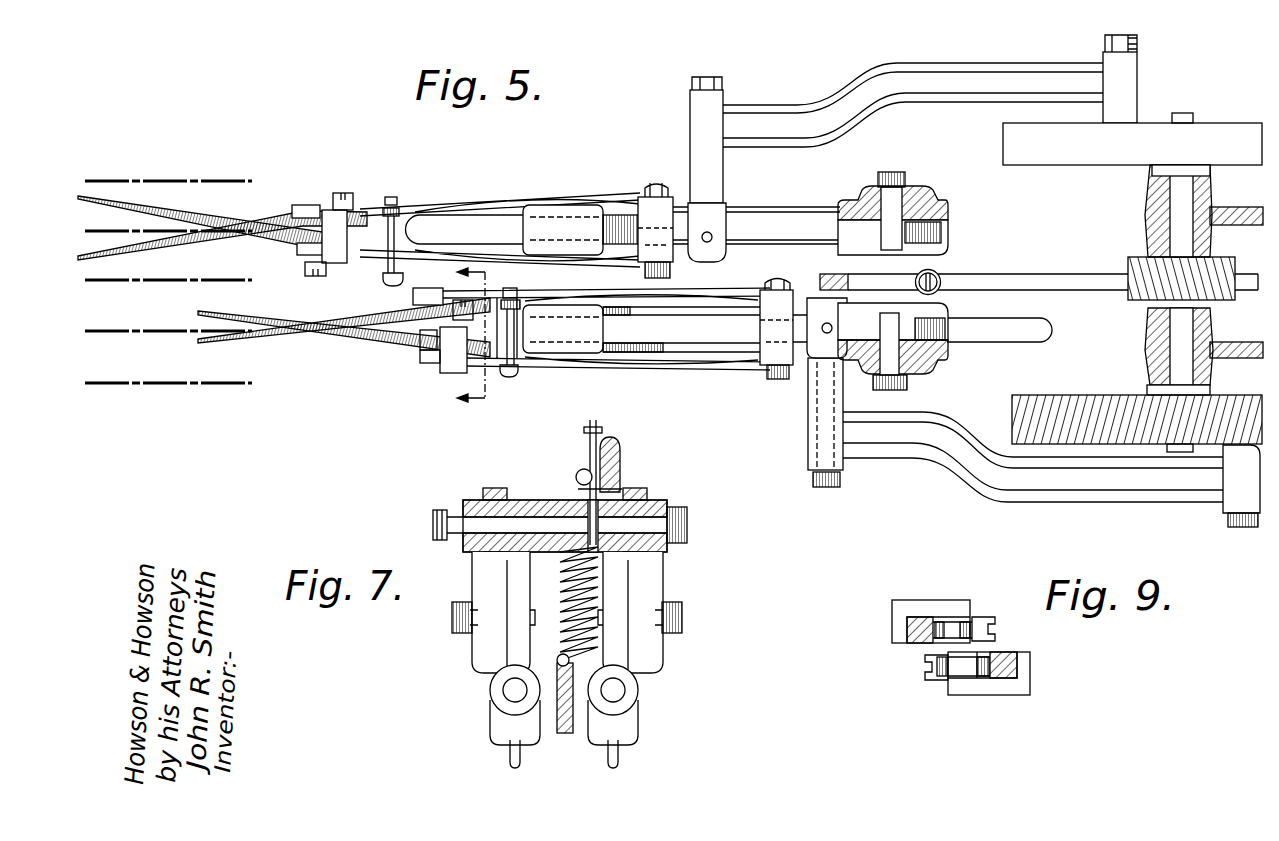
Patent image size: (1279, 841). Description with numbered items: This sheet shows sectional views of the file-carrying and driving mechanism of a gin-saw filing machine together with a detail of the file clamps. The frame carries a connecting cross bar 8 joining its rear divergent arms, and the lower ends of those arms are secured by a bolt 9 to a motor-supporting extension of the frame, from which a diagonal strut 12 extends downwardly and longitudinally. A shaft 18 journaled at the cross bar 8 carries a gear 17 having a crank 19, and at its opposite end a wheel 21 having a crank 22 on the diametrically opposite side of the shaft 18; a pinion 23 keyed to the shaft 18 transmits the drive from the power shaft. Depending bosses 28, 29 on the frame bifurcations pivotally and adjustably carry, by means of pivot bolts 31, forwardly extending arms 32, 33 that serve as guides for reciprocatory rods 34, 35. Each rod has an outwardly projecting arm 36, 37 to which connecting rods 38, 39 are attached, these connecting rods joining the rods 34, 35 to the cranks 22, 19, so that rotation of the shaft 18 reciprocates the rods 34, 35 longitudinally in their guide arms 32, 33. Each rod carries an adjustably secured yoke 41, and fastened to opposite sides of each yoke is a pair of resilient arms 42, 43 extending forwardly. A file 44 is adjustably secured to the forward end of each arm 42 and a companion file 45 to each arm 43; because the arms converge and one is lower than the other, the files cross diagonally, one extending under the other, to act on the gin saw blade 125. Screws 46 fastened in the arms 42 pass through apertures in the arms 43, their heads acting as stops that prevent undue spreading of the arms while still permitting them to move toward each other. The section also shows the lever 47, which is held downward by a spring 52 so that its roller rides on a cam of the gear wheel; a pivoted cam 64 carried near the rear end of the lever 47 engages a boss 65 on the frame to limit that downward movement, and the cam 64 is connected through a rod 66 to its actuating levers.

In FIG. 5, the gin saw blade 125 is at (157, 170).
In FIG. 5, the file 44 is at (212, 212).
In FIG. 9, the file 44 is at (925, 622).
In FIG. 5, the file 45 is at (180, 253).
In FIG. 9, the file 45 is at (995, 660).
In FIG. 5, the resilient arm 42 is at (300, 205).
In FIG. 9, the resilient arm 42 is at (970, 695).
In FIG. 5, the resilient arm 43 is at (420, 250).
In FIG. 9, the resilient arm 43 is at (892, 612).
In FIG. 5, the screw 46 is at (385, 233).
In FIG. 5, the yoke 41 is at (638, 217).
In FIG. 5, the outwardly projecting arm 36 is at (695, 182).
In FIG. 5, the forwardly extending arm 32 is at (740, 208).
In FIG. 7, the forwardly extending arm 32 is at (638, 735).
In FIG. 5, the reciprocatory rod 34 is at (797, 222).
In FIG. 7, the reciprocatory rod 34 is at (630, 693).
In FIG. 5, the pivot bolt 31 is at (890, 173).
In FIG. 7, the pivot bolt 31 is at (462, 620).
In FIG. 5, the depending boss 28 is at (937, 205).
In FIG. 7, the depending boss 28 is at (647, 575).
In FIG. 5, the connecting rod 38 is at (887, 65).
In FIG. 5, the crank 22 is at (1137, 40).
In FIG. 5, the wheel 21 is at (1072, 165).
In FIG. 5, the connecting cross bar 8 is at (1240, 207).
In FIG. 5, the pinion 23 is at (1147, 258).
In FIG. 5, the diagonal strut 12 is at (1012, 275).
In FIG. 7, the diagonal strut 12 is at (567, 737).
In FIG. 5, the spring 52 is at (938, 275).
In FIG. 7, the spring 52 is at (573, 573).
In FIG. 5, the shaft 18 is at (1178, 335).
In FIG. 5, the gear 17 is at (1068, 395).
In FIG. 5, the connecting rod 39 is at (982, 473).
In FIG. 5, the crank 19 is at (1248, 527).
In FIG. 5, the outwardly projecting arm 37 is at (813, 378).
In FIG. 5, the reciprocatory rod 35 is at (702, 323).
In FIG. 7, the reciprocatory rod 35 is at (510, 695).
In FIG. 5, the forwardly extending arm 33 is at (658, 352).
In FIG. 7, the forwardly extending arm 33 is at (493, 738).
In FIG. 5, the depending boss 29 is at (923, 363).
In FIG. 7, the depending boss 29 is at (487, 653).
In FIG. 5, the bolt 9 is at (464, 336).
In FIG. 7, the boss 65 is at (640, 497).
In FIG. 7, the pivoted cam 64 is at (590, 447).
In FIG. 7, the rod 66 is at (602, 427).
In FIG. 7, the lever 47 is at (620, 445).